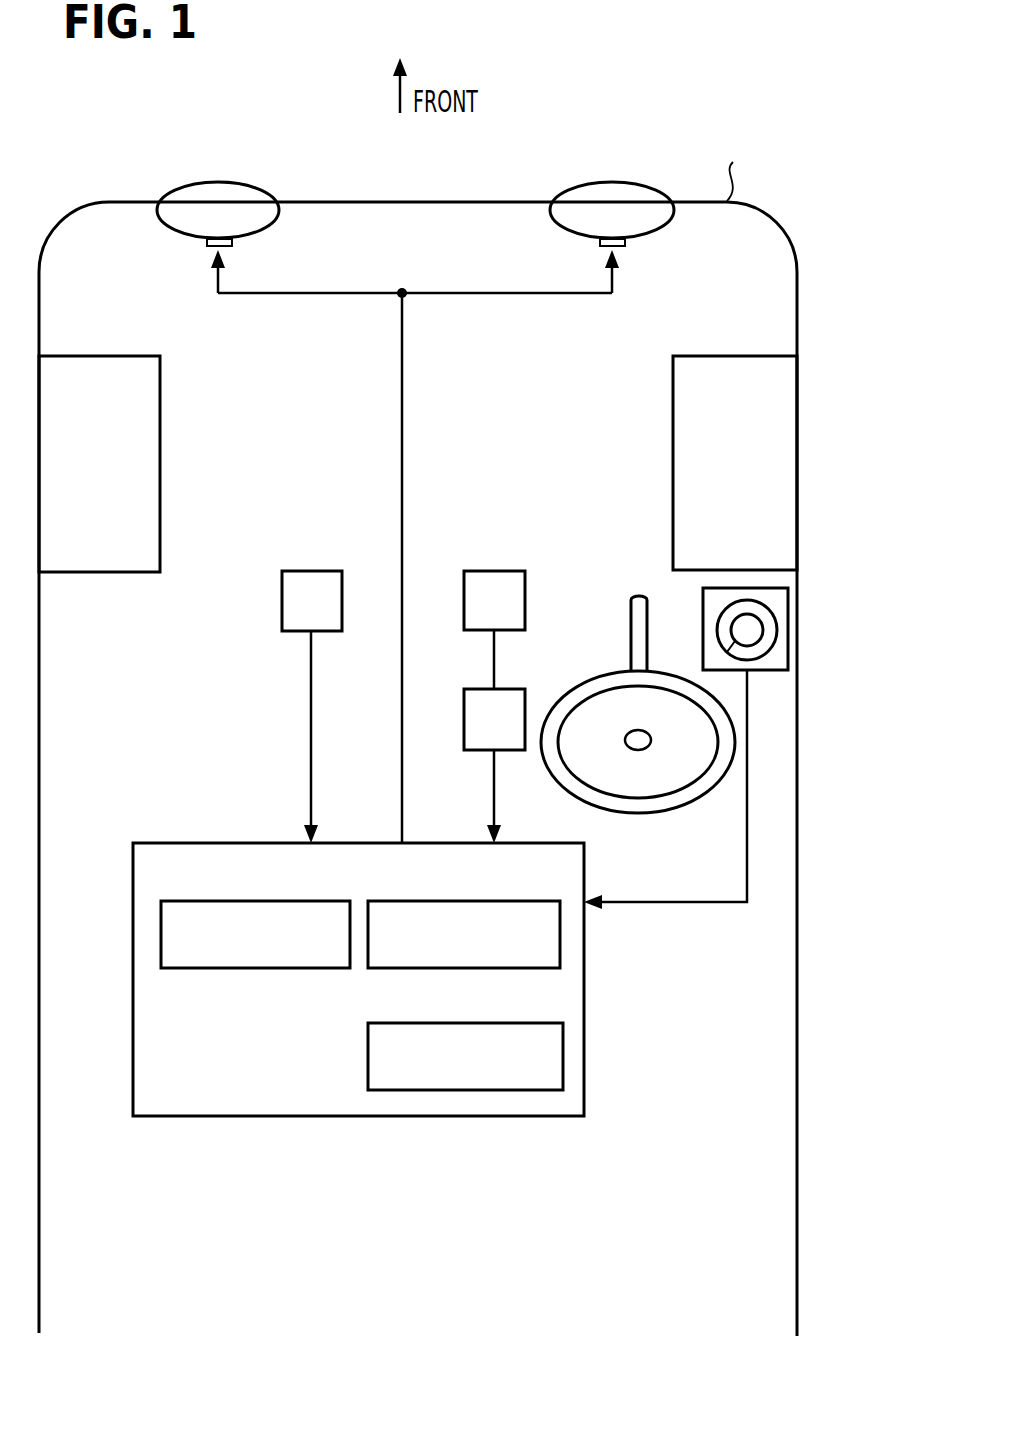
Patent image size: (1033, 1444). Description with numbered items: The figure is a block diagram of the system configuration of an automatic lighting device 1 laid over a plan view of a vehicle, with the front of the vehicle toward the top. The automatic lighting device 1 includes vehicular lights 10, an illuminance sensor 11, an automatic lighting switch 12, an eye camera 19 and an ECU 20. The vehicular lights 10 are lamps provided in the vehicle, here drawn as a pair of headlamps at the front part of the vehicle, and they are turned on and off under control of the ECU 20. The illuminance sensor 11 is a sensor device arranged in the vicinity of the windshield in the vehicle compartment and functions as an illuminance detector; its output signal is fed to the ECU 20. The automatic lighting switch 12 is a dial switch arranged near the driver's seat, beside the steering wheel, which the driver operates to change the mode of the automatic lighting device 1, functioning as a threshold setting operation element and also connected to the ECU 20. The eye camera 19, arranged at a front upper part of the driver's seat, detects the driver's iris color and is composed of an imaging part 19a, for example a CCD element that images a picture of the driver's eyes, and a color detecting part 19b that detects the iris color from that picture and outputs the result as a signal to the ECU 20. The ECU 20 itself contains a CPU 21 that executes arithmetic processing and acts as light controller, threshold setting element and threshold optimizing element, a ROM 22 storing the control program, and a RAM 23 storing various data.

The automatic lighting device 1 is at (688, 55).
The vehicular lights 10 is at (223, 182).
The illuminance sensor 11 is at (308, 571).
The automatic lighting switch 12 is at (776, 618).
The eye camera 19 is at (524, 652).
The imaging part 19a is at (497, 571).
The color detecting part 19b is at (500, 689).
The ECU 20 is at (400, 979).
The CPU 21 is at (272, 901).
The ROM 22 is at (445, 901).
The RAM 23 is at (445, 1023).